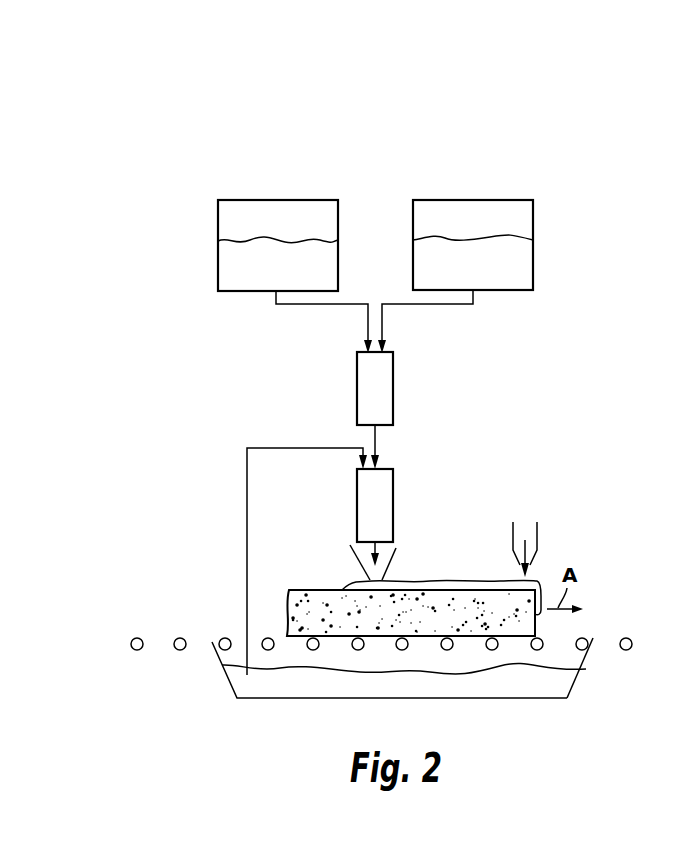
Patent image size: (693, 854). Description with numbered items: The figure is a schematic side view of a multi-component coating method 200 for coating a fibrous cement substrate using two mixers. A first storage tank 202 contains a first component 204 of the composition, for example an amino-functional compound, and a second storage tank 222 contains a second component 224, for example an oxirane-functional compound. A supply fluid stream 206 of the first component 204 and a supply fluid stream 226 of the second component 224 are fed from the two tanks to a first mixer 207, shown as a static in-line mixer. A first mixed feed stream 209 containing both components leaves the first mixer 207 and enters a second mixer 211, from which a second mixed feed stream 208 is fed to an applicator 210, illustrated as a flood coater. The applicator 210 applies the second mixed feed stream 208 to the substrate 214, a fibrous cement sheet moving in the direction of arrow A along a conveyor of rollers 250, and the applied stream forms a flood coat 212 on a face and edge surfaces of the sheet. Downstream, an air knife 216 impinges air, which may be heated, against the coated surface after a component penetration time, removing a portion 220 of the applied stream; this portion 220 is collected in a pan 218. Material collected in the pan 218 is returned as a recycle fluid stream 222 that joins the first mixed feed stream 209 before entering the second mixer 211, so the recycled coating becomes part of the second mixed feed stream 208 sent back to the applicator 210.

The multi-component coating method 200 is at (372, 148).
The first storage tank 202 is at (236, 200).
The first component 204 is at (230, 241).
The supply fluid stream 206 is at (315, 307).
The first mixer 207 is at (394, 388).
The second mixed feed stream 208 is at (370, 553).
The first mixed feed stream 209 is at (375, 437).
The applicator 210 is at (395, 557).
The second mixer 211 is at (395, 495).
The flood coat 212 is at (450, 578).
The substrate 214 is at (314, 590).
The air knife 216 is at (537, 537).
The pan 218 is at (583, 663).
The portion of applied second mixed feed stream 220 is at (222, 665).
The second storage tank 222 is at (515, 199).
The second component 224 is at (520, 240).
The supply fluid stream 226 is at (433, 307).
The rollers 250 is at (223, 637).